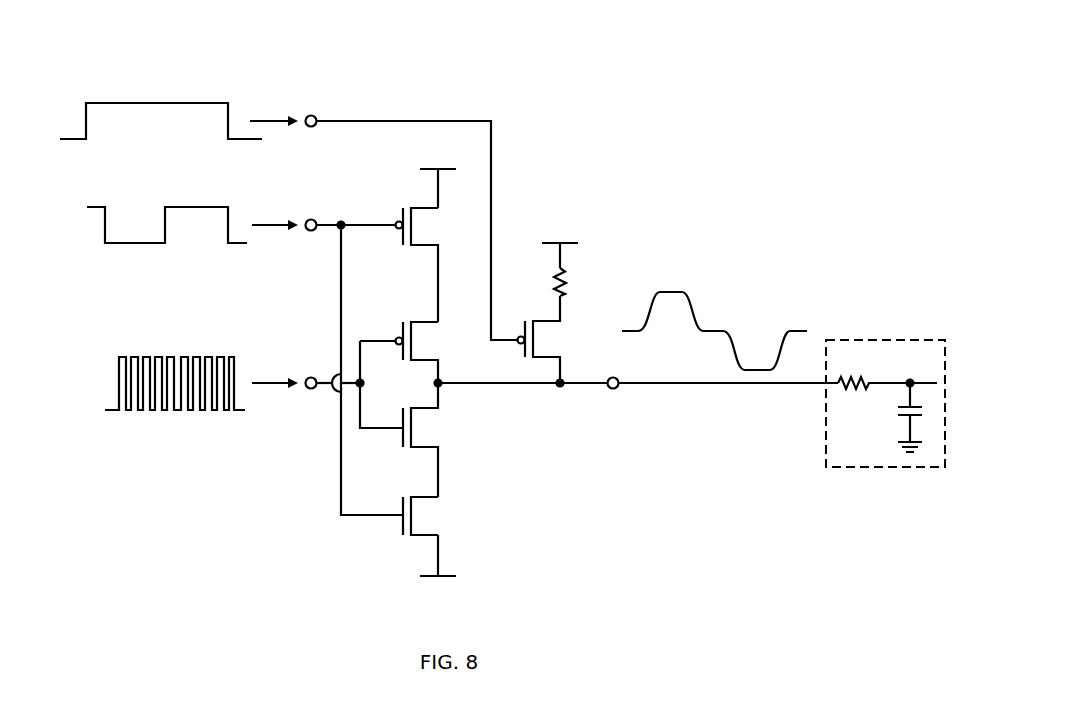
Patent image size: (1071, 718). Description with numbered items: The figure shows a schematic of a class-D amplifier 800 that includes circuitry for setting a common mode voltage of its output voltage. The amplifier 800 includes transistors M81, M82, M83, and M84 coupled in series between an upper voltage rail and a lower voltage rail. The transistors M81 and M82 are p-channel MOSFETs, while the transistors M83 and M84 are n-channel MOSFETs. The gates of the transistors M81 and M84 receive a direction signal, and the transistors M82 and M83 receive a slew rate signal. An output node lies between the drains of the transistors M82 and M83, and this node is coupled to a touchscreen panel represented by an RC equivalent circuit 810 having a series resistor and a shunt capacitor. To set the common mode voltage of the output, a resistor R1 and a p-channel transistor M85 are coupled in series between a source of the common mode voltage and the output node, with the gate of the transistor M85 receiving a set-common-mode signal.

The class-D amplifier 800 is at (589, 84).
The RC equivalent circuit 810 is at (852, 340).
The transistor M81 is at (432, 265).
The transistor M82 is at (432, 352).
The transistor M83 is at (435, 440).
The transistor M84 is at (435, 516).
The transistor M85 is at (554, 339).
The resistor R1 is at (545, 282).